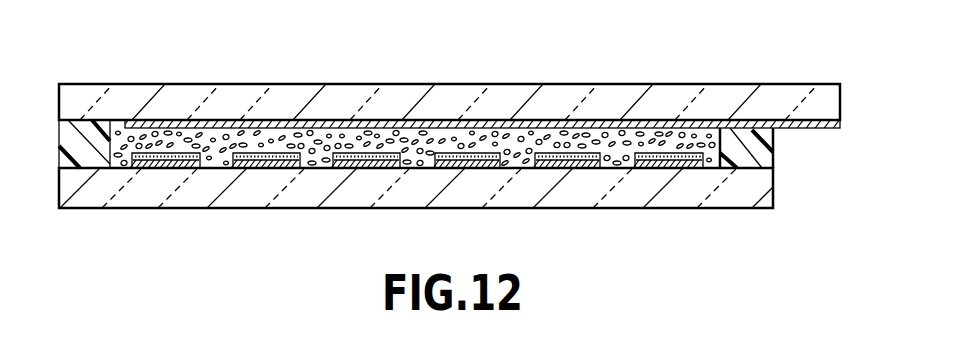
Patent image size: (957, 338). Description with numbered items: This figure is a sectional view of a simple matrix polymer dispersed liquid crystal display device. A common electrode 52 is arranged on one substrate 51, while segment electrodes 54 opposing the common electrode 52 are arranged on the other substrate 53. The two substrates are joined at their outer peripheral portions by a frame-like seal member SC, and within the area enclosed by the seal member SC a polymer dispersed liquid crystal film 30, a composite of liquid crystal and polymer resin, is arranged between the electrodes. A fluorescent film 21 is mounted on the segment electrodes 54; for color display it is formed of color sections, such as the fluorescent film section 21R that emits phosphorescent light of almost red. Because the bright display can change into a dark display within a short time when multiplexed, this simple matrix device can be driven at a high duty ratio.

The fluorescent film section 21R is at (165, 142).
The common electrode 52 is at (347, 122).
The polymer dispersed liquid crystal film 30 is at (467, 140).
The fluorescent film 21 is at (583, 152).
The substrate 51 is at (690, 100).
The segment electrodes 54 is at (256, 168).
The substrate 53 is at (730, 190).
The seal member SC is at (760, 155).